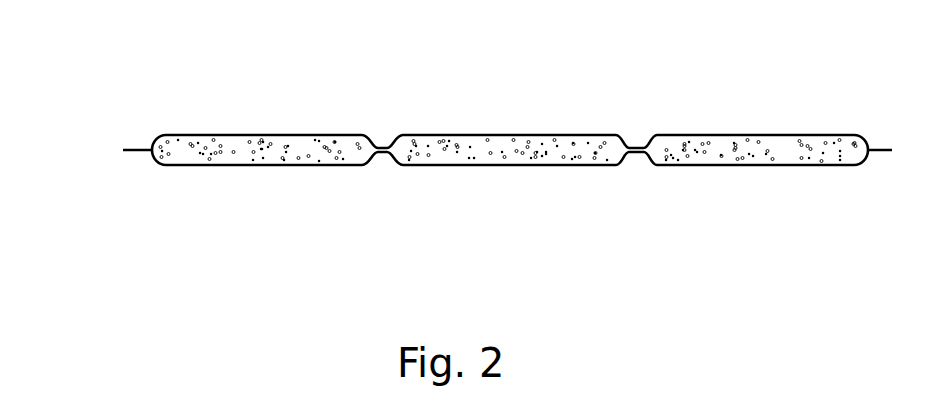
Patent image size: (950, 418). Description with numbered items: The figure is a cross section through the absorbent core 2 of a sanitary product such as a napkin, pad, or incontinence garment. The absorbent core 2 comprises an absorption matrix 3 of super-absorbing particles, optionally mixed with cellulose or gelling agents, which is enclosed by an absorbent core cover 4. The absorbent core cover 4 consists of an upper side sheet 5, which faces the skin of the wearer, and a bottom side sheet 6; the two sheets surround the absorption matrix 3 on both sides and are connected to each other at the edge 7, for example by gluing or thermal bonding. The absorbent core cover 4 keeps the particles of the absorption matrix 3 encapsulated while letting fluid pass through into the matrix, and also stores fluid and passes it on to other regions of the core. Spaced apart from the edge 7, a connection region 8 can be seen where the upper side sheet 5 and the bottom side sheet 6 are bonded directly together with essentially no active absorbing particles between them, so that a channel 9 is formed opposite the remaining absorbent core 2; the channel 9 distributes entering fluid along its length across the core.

The absorbent core 2 is at (108, 90).
The absorption matrix 3 is at (490, 148).
The absorbent core cover 4 is at (858, 125).
The upper side sheet 5 is at (153, 134).
The bottom side sheet 6 is at (152, 167).
The edge 7 is at (140, 148).
The connection region 8 is at (381, 147).
The channel 9 is at (637, 146).